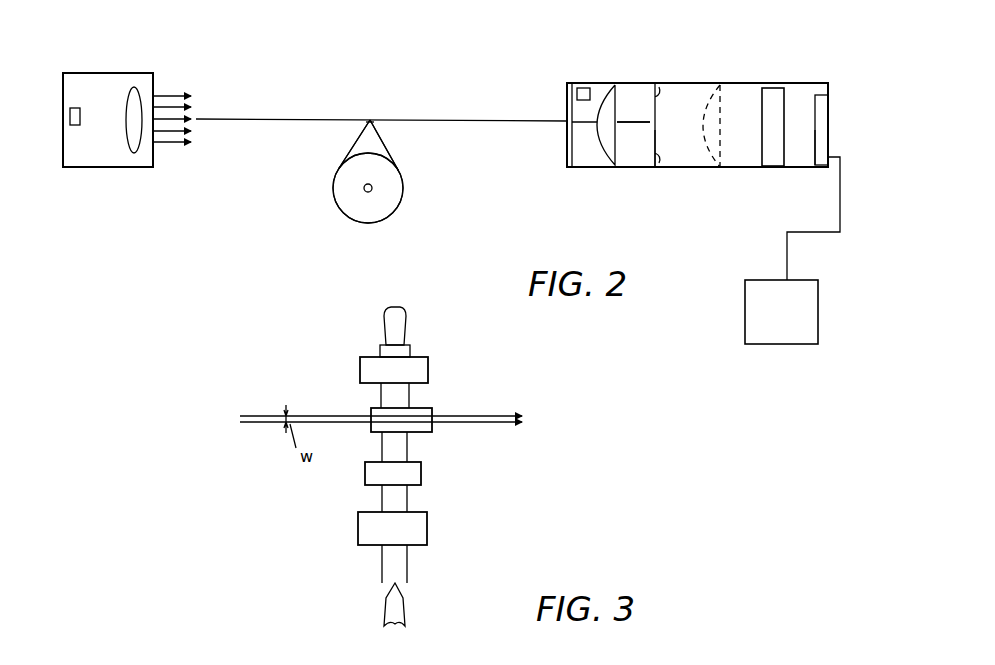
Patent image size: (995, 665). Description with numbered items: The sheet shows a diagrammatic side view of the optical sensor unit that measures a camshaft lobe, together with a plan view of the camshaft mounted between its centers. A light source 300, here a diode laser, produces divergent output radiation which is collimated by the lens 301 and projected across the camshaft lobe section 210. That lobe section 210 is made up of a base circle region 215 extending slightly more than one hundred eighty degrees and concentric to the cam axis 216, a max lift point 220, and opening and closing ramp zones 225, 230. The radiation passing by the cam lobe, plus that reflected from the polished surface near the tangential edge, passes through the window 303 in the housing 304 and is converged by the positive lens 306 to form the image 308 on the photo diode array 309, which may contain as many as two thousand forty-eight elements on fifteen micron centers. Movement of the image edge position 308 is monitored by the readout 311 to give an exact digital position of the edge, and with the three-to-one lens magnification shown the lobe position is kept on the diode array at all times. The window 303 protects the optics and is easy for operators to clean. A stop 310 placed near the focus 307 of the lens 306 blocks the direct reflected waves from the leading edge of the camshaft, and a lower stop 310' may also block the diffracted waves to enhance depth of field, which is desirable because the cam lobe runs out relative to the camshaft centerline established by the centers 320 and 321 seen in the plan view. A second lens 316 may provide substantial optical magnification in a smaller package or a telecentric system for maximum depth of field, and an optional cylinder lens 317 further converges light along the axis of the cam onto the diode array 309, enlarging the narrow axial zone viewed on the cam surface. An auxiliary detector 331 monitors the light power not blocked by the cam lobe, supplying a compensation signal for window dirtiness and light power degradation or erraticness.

In FIG. 2, the light source 300 is at (72, 110).
In FIG. 2, the lens 301 is at (136, 100).
In FIG. 2, the lobe section 210 is at (331, 215).
In FIG. 2, the base circle region 215 is at (400, 212).
In FIG. 2, the cam axis 216 is at (374, 188).
In FIG. 2, the max lift point 220 is at (371, 120).
In FIG. 2, the opening ramp zone 225 is at (346, 142).
In FIG. 2, the closing ramp zone 230 is at (396, 145).
In FIG. 2, the window 303 is at (565, 96).
In FIG. 2, the auxiliary detector 331 is at (585, 88).
In FIG. 2, the positive lens 306 is at (612, 98).
In FIG. 2, the stop 310 is at (683, 108).
In FIG. 2, the lower stop 310' is at (682, 167).
In FIG. 2, the focus 307 is at (650, 122).
In FIG. 2, the housing 304 is at (716, 90).
In FIG. 2, the second lens 316 is at (716, 113).
In FIG. 2, the cylinder lens 317 is at (775, 100).
In FIG. 2, the photo diode array 309 is at (822, 105).
In FIG. 2, the image 308 is at (808, 140).
In FIG. 2, the readout 311 is at (798, 327).
In FIG. 3, the center 320 is at (405, 320).
In FIG. 3, the center 321 is at (405, 612).